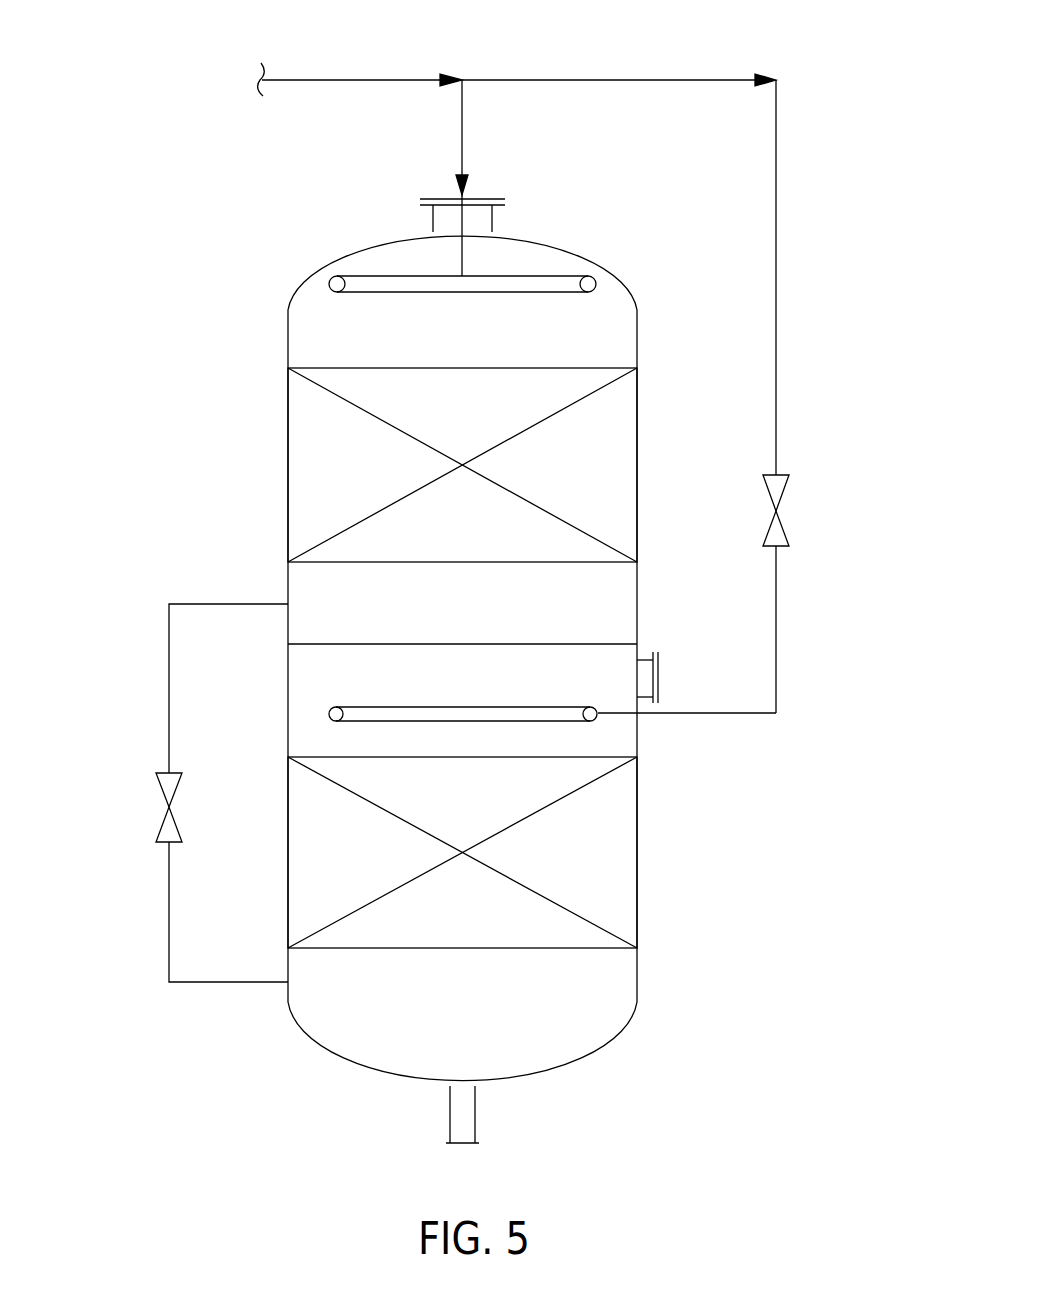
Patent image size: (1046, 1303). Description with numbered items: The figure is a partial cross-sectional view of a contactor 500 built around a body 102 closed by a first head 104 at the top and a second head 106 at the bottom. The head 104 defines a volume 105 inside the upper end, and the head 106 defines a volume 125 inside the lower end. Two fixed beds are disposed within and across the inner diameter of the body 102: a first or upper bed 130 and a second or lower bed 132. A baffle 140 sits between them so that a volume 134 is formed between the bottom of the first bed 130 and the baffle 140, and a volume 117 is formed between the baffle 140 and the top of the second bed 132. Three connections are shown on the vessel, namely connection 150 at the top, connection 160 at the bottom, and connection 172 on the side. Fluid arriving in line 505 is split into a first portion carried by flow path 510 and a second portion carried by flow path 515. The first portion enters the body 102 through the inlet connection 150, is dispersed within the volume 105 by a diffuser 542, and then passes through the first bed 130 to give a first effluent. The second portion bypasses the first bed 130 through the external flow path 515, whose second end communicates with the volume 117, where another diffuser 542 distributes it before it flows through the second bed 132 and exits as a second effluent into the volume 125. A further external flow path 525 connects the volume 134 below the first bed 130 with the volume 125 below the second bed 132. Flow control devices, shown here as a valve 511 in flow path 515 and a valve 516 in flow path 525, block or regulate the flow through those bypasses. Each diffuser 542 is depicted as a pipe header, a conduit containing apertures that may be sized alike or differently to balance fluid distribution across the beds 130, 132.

The contactor 500 is at (248, 170).
The line 505 is at (328, 80).
The flowpath 510 is at (460, 125).
The flowpath 515 is at (590, 80).
The flow control device 511 is at (789, 530).
The flowpath 525 is at (168, 654).
The flow control device 516 is at (157, 826).
The body 102 is at (287, 503).
The head 104 is at (365, 241).
The head 106 is at (325, 1057).
The volume 105 is at (328, 321).
The first bed 130 is at (328, 449).
The volume 134 is at (332, 583).
The baffle 140 is at (450, 644).
The volume 117 is at (327, 676).
The second bed 132 is at (607, 842).
The volume 125 is at (586, 1027).
The connection 150 is at (497, 198).
The connection 160 is at (472, 1147).
The connection 172 is at (659, 673).
The diffuser 542 is at (540, 293).